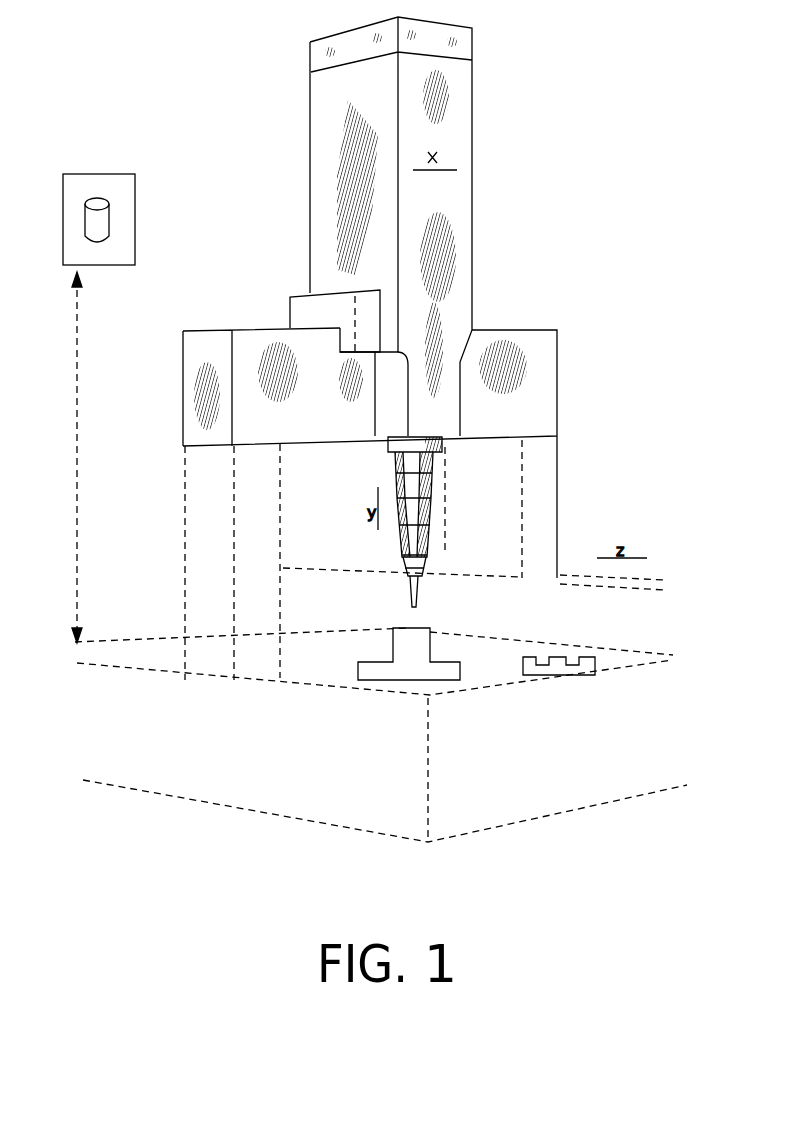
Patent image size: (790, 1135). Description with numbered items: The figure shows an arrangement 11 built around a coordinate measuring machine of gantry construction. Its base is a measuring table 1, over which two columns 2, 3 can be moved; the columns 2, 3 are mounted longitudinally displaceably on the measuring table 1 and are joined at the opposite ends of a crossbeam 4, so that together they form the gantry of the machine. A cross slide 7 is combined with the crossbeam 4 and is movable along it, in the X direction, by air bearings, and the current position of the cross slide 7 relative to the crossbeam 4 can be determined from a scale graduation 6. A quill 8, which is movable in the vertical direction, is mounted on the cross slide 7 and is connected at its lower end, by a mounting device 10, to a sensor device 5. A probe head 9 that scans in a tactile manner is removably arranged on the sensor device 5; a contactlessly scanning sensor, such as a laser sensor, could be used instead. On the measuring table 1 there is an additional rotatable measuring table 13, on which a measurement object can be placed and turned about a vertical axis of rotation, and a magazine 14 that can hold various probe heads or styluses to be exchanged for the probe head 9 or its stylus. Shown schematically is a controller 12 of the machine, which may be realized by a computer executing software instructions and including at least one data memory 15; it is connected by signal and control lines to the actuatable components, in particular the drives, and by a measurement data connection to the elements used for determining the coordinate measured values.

The measuring table 1 is at (127, 638).
The column 2 is at (558, 527).
The column 3 is at (183, 511).
The crossbeam 4 is at (208, 328).
The sensor device 5 is at (395, 526).
The scale graduation 6 is at (499, 441).
The cross slide 7 is at (310, 122).
The quill 8 is at (446, 443).
The probe head 9 is at (420, 566).
The mounting device 10 is at (393, 485).
The arrangement 11 is at (163, 837).
The controller 12 is at (133, 266).
The rotatable measuring table 13 is at (375, 681).
The magazine 14 is at (548, 677).
The data memory 15 is at (104, 203).